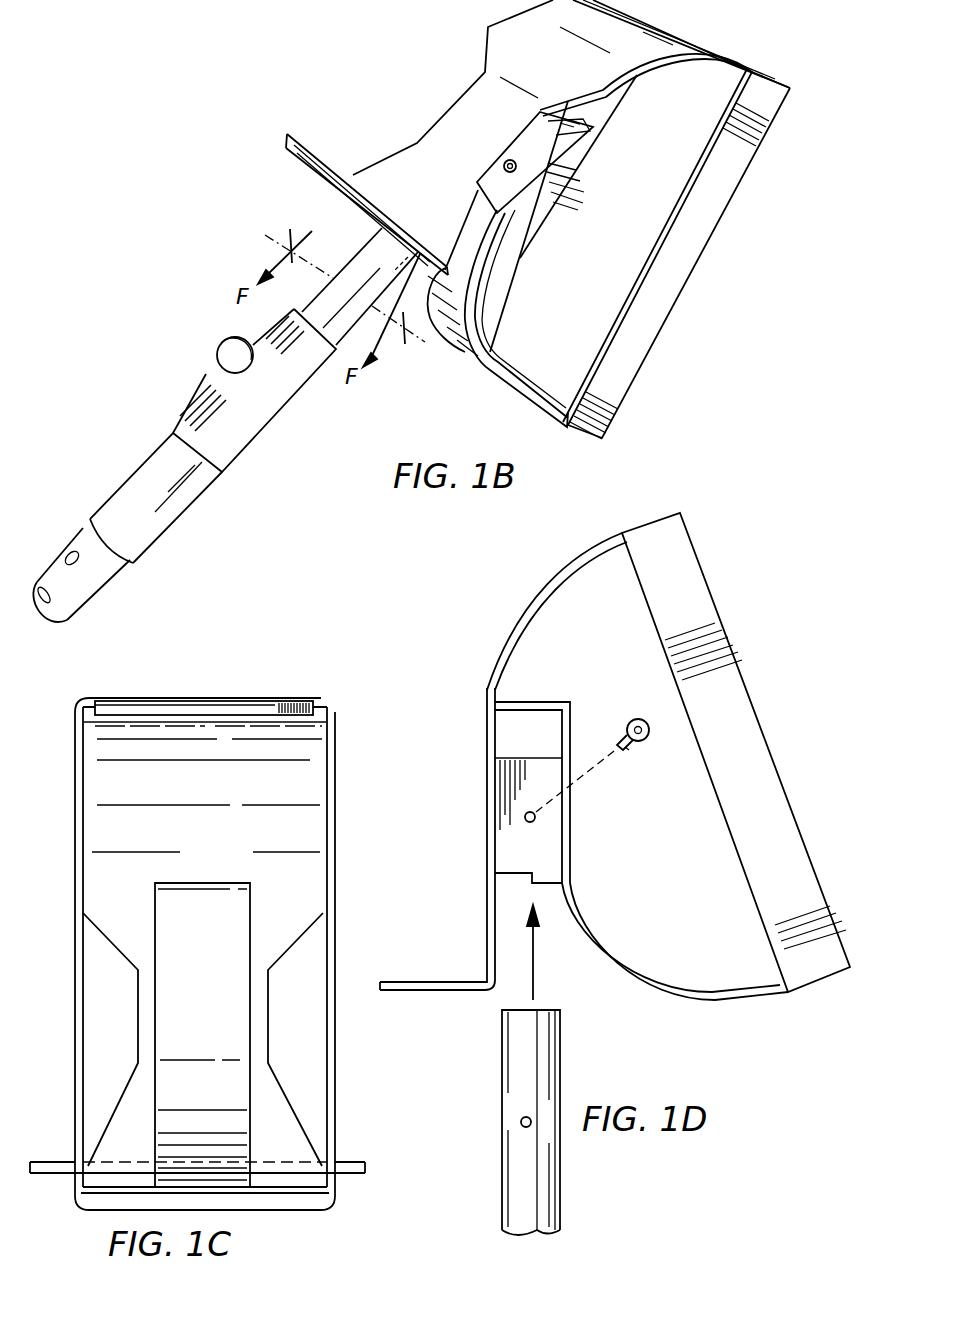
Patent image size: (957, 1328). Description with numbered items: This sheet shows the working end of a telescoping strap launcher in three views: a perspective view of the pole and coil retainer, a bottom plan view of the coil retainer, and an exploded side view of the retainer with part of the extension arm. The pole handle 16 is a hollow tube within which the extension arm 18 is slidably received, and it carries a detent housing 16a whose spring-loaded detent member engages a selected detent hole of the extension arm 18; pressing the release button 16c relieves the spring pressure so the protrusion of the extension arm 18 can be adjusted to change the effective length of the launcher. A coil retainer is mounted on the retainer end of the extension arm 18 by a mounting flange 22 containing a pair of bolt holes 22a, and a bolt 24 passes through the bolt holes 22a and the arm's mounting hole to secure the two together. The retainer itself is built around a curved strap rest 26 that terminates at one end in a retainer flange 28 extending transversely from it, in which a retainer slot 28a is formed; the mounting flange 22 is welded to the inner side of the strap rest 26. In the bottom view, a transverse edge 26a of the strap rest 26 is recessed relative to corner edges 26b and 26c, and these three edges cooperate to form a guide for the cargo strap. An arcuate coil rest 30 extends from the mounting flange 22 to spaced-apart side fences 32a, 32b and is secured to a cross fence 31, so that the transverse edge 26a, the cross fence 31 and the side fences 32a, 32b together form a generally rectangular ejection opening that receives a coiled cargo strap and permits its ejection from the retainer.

In FIG. 1B, the pole handle 16 is at (168, 510).
In FIG. 1B, the detent housing 16a is at (265, 398).
In FIG. 1B, the release button 16c is at (232, 350).
In FIG. 1B, the extension arm 18 is at (85, 578).
In FIG. 1D, the mounting flange 22 is at (553, 823).
In FIG. 1D, the bolt holes 22a is at (532, 823).
In FIG. 1D, the bolt 24 is at (625, 733).
In FIG. 1B, the strap rest 26 is at (488, 28).
In FIG. 1C, the strap rest 26 is at (250, 802).
In FIG. 1D, the strap rest 26 is at (558, 567).
In FIG. 1C, the transverse edge 26a is at (225, 700).
In FIG. 1C, the corner edge 26b is at (97, 698).
In FIG. 1C, the corner edge 26c is at (307, 699).
In FIG. 1B, the retainer flange 28 is at (322, 158).
In FIG. 1D, the retainer flange 28 is at (428, 993).
In FIG. 1B, the retainer slot 28a is at (380, 200).
In FIG. 1B, the coil rest 30 is at (459, 342).
In FIG. 1C, the coil rest 30 is at (190, 977).
In FIG. 1D, the coil rest 30 is at (620, 980).
In FIG. 1C, the cross fence 31 is at (298, 1203).
In FIG. 1B, the side fence 32a is at (675, 262).
In FIG. 1C, the side fence 32a is at (73, 822).
In FIG. 1B, the side fence 32b is at (593, 148).
In FIG. 1C, the side fence 32b is at (332, 952).